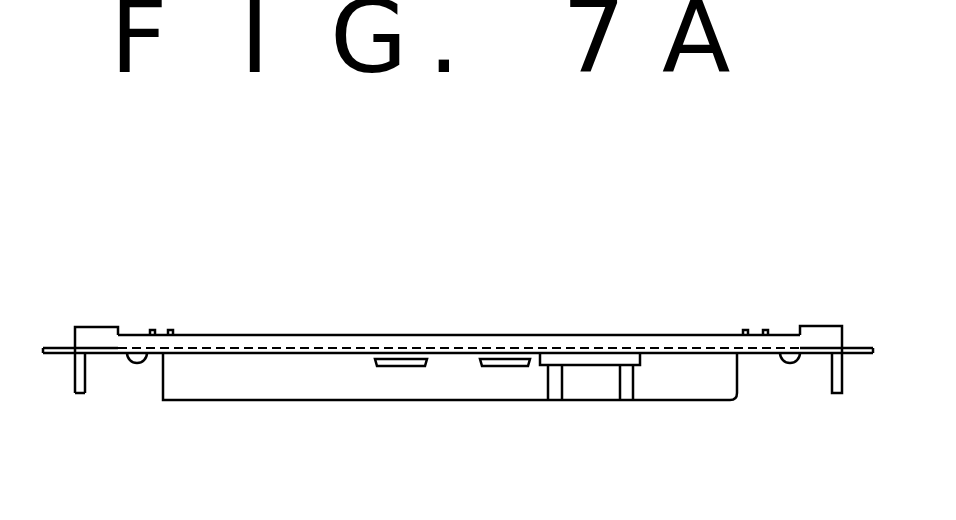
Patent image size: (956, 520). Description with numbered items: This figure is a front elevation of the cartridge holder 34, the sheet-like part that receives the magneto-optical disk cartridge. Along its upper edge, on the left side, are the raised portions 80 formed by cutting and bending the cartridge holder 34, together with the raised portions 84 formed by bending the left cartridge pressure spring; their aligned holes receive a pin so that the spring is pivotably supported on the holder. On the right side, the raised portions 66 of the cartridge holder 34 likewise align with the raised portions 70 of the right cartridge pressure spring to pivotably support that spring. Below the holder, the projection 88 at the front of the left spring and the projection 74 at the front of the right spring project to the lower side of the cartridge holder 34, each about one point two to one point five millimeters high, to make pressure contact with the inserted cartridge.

The cartridge holder 34 is at (487, 335).
The raised portions 84 is at (152, 331).
The raised portions 80 is at (170, 331).
The raised portions 66 is at (746, 331).
The raised portions 70 is at (766, 331).
The projection 88 is at (137, 363).
The projection 74 is at (793, 363).